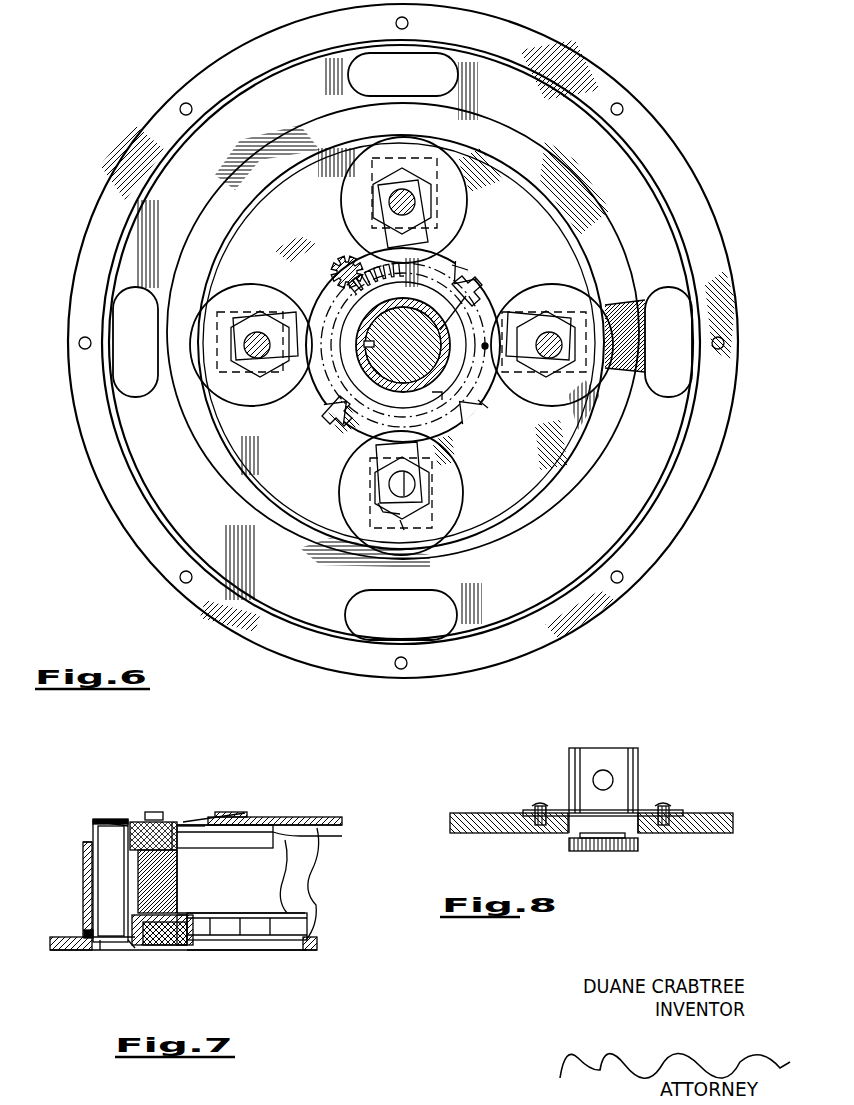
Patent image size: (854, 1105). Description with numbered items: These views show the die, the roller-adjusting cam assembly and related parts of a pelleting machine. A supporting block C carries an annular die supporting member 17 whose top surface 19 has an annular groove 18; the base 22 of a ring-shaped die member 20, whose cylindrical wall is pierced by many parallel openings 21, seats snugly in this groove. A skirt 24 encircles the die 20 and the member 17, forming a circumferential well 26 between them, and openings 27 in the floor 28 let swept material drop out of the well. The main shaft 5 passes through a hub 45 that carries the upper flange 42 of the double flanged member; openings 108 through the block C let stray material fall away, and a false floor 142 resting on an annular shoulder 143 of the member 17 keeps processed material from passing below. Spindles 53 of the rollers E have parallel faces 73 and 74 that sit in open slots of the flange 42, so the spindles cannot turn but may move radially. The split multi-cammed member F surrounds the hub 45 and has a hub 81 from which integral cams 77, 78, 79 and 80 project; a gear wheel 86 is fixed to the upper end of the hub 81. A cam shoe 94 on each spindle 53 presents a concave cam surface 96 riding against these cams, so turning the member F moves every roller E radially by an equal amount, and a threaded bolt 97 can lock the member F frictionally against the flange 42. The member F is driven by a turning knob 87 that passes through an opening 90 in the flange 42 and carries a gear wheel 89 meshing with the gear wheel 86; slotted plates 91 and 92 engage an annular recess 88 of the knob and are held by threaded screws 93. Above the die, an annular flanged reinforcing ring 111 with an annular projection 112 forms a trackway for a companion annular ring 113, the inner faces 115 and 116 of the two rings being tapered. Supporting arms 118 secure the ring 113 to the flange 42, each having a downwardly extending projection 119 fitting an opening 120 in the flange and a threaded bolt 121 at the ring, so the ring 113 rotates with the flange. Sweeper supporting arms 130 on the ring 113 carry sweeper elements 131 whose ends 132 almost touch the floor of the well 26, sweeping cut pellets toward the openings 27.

In FIG. 6, the main shaft 5 is at (452, 364).
In FIG. 7, the annular die supporting member 17 is at (175, 947).
In FIG. 7, the annular groove 18 is at (148, 947).
In FIG. 6, the top surface 19 is at (574, 518).
In FIG. 6, the ring-shaped die member 20 is at (582, 486).
In FIG. 7, the ring-shaped die member 20 is at (280, 883).
In FIG. 6, the parallel openings 21 is at (642, 330).
In FIG. 7, the parallel openings 21 is at (138, 872).
In FIG. 7, the base 22 is at (130, 950).
In FIG. 6, the skirt 24 is at (676, 438).
In FIG. 7, the skirt 24 is at (83, 900).
In FIG. 6, the well 26 is at (700, 458).
In FIG. 7, the well 26 is at (83, 866).
In FIG. 6, the openings 27 is at (452, 88).
In FIG. 7, the openings 27 is at (100, 952).
In FIG. 6, the floor 28 is at (506, 582).
In FIG. 7, the floor 28 is at (92, 948).
In FIG. 7, the upper flange 42 is at (268, 817).
In FIG. 8, the upper flange 42 is at (475, 816).
In FIG. 6, the hub 45 is at (428, 388).
In FIG. 6, the spindles 53 is at (373, 208).
In FIG. 6, the parallel face 73 is at (390, 482).
In FIG. 6, the parallel face 74 is at (403, 505).
In FIG. 6, the cam 77 is at (302, 283).
In FIG. 6, the cam 78 is at (470, 262).
In FIG. 6, the cam 79 is at (488, 410).
In FIG. 6, the cam 80 is at (345, 430).
In FIG. 6, the hub 81 is at (440, 400).
In FIG. 6, the gear wheel 86 is at (377, 266).
In FIG. 8, the turning knob 87 is at (613, 752).
In FIG. 8, the annular recess 88 is at (640, 811).
In FIG. 6, the gear wheel 89 is at (342, 260).
In FIG. 8, the gear wheel 89 is at (612, 852).
In FIG. 8, the opening 90 is at (640, 836).
In FIG. 8, the slotted plate 91 is at (538, 808).
In FIG. 8, the slotted plate 92 is at (688, 813).
In FIG. 8, the threaded screws 93 is at (546, 806).
In FIG. 6, the cam shoe 94 is at (416, 205).
In FIG. 6, the concave cam surface 96 is at (458, 446).
In FIG. 6, the threaded bolt 97 is at (486, 320).
In FIG. 7, the openings 108 is at (250, 951).
In FIG. 7, the annular flanged reinforcing ring 111 is at (177, 823).
In FIG. 7, the annular projection 112 is at (100, 822).
In FIG. 7, the companion annular ring 113 is at (137, 822).
In FIG. 7, the inner face 115 is at (200, 845).
In FIG. 7, the inner face 116 is at (183, 828).
In FIG. 7, the supporting arms 118 is at (190, 822).
In FIG. 7, the downwardly extending projection 119 is at (232, 813).
In FIG. 7, the opening 120 is at (300, 836).
In FIG. 7, the threaded bolt 121 is at (158, 806).
In FIG. 7, the sweeper supporting arms 130 is at (110, 818).
In FIG. 7, the sweeper element 131 is at (100, 832).
In FIG. 7, the end 132 is at (84, 933).
In FIG. 6, the false floor 142 is at (235, 440).
In FIG. 7, the false floor 142 is at (243, 913).
In FIG. 7, the annular shoulder 143 is at (185, 915).
In FIG. 6, the supporting block C is at (681, 493).
In FIG. 7, the supporting block C is at (272, 951).
In FIG. 6, the rollers E is at (438, 162).
In FIG. 6, the split multi-cammed member F is at (326, 400).